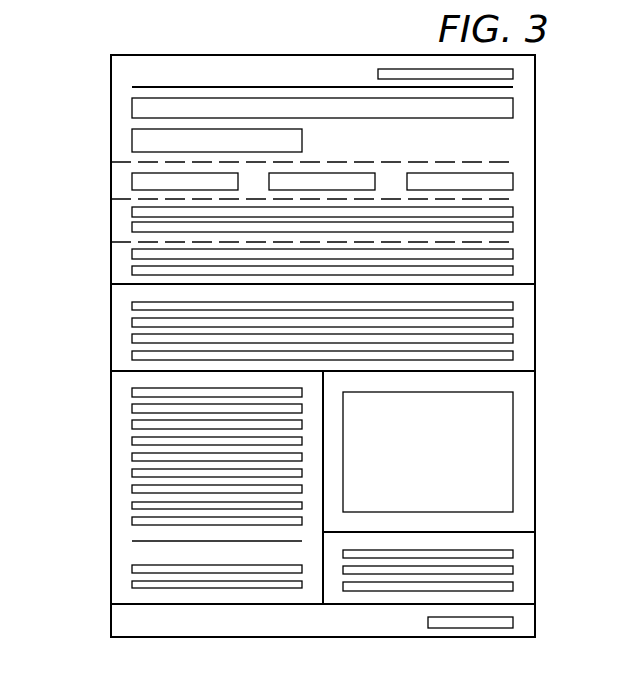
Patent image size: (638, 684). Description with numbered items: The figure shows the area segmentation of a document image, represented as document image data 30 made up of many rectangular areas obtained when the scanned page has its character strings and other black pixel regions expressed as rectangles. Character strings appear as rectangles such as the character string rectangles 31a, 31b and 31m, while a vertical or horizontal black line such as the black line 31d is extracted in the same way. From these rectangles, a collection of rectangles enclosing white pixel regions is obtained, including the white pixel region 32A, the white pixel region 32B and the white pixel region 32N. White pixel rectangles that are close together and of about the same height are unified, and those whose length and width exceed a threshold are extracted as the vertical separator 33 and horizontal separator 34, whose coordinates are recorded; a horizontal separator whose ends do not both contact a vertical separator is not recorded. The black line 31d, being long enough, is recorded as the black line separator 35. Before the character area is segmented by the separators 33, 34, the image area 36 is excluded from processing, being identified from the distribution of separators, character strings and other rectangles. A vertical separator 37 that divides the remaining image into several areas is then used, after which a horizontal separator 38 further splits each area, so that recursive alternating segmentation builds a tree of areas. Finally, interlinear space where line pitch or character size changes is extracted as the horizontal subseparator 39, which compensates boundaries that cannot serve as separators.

The document image data 30 is at (285, 40).
The character string rectangle 31a is at (138, 110).
The character string rectangle 31b is at (138, 142).
The black line 31d is at (197, 87).
The character string rectangle 31m is at (130, 583).
The white pixel region 32A is at (120, 72).
The white pixel region 32B is at (128, 180).
The white pixel region 32N is at (120, 488).
The vertical separator 33 is at (130, 400).
The horizontal separator 34 is at (378, 55).
The black line separator 35 is at (505, 88).
The image area 36 is at (382, 425).
The vertical separator 37 is at (323, 585).
The horizontal separator 38 is at (520, 534).
The horizontal subseparator 39 is at (508, 200).